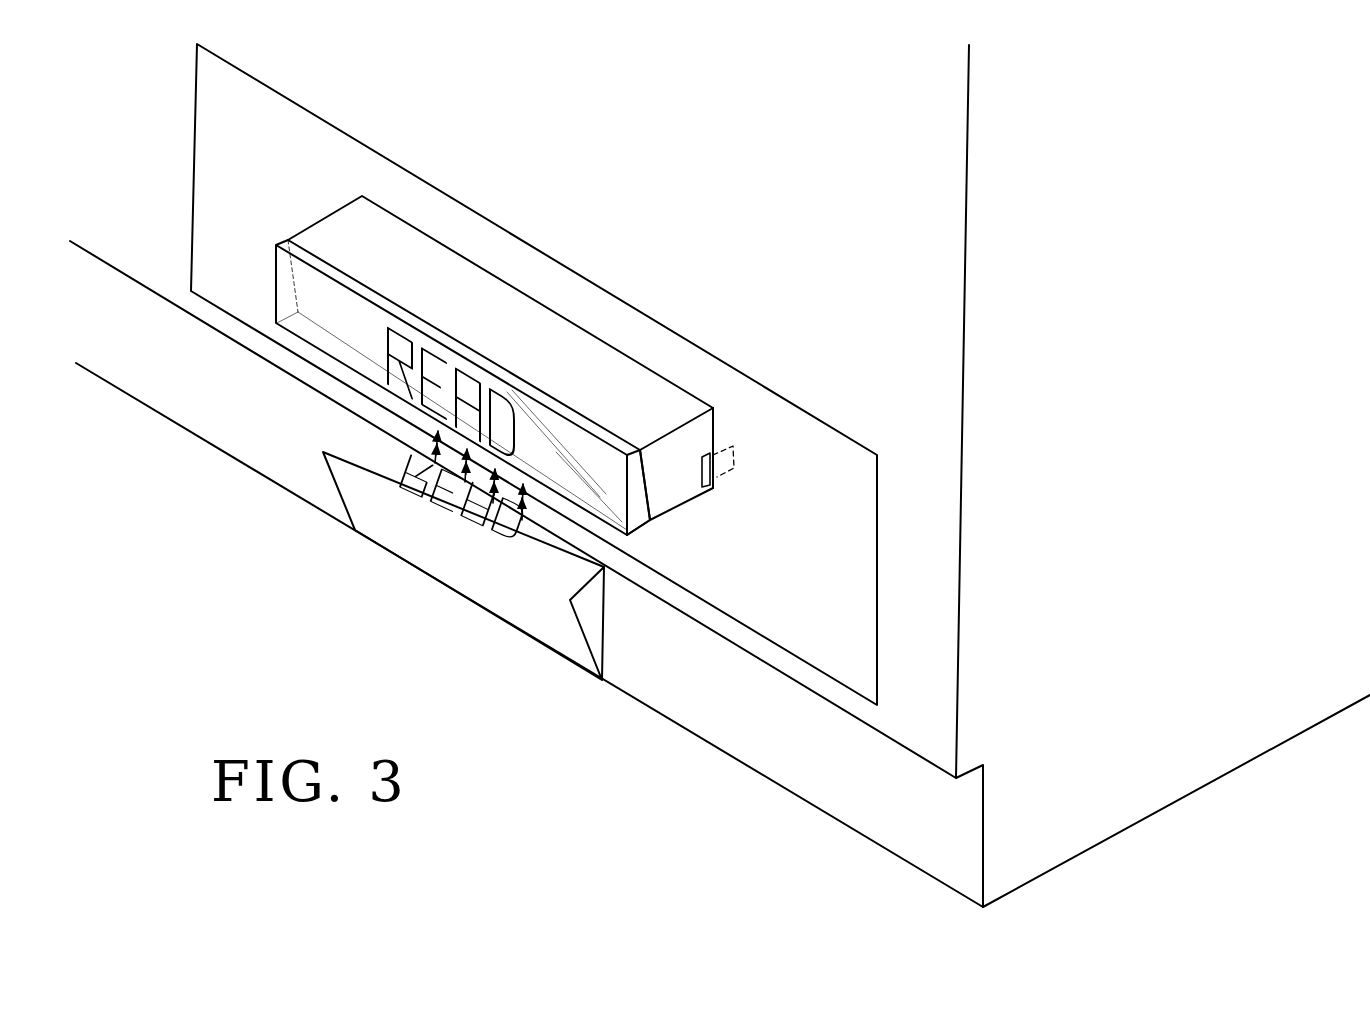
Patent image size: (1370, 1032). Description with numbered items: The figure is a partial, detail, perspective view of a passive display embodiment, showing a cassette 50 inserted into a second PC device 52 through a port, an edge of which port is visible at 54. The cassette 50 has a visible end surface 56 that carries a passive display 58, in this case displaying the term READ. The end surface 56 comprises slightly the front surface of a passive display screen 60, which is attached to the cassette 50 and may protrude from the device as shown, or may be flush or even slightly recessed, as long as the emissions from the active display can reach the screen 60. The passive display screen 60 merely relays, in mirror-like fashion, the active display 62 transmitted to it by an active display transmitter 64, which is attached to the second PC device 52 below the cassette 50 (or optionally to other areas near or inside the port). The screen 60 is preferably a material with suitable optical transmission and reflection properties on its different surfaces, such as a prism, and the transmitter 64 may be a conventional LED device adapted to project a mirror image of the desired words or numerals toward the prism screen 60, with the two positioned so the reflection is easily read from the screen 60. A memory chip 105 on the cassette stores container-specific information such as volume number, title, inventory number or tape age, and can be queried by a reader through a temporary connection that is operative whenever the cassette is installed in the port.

The cassette 50 is at (498, 300).
The second PC device 52 is at (791, 328).
The edge of port 54 is at (687, 398).
The end surface 56 is at (361, 321).
The passive display 58 is at (421, 396).
The passive display screen 60 is at (637, 523).
The active display 62 is at (517, 543).
The active display transmitter 64 is at (417, 527).
The memory chip 105 is at (710, 470).